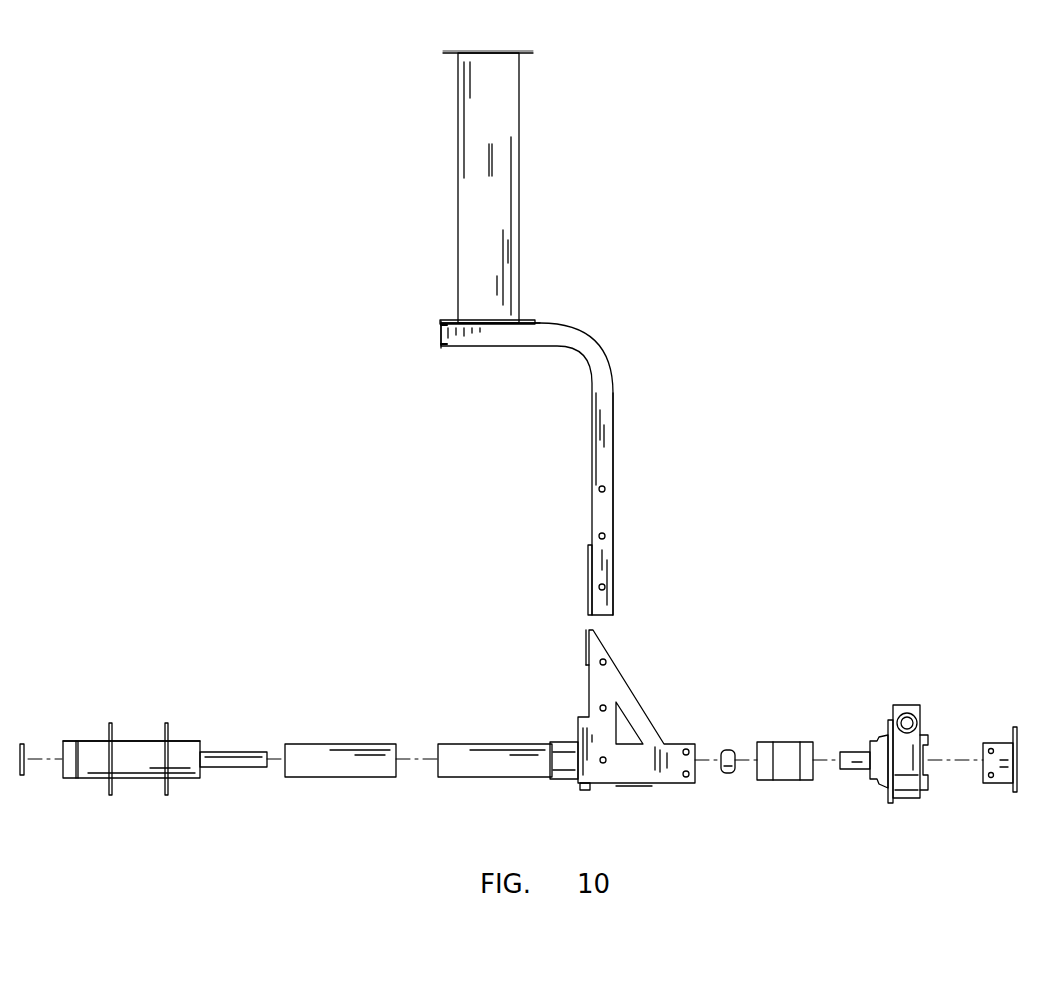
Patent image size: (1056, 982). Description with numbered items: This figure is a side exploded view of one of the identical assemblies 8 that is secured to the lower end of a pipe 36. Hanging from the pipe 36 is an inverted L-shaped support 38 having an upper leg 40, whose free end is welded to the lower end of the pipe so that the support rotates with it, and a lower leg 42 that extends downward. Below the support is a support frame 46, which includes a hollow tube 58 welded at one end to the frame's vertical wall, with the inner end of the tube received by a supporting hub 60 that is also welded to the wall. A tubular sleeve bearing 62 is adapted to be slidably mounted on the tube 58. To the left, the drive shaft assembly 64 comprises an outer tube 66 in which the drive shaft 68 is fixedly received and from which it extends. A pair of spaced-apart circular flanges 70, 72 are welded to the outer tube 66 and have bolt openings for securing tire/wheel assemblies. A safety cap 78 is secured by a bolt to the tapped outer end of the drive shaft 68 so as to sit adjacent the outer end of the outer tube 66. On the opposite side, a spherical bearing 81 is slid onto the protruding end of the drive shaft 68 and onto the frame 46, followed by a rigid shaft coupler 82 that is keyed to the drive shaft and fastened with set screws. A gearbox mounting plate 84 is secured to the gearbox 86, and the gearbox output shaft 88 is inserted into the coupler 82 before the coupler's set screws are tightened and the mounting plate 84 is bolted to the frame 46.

The assembly 8 is at (763, 655).
The pipe 36 is at (512, 197).
The inverted L-shaped support 38 is at (632, 321).
The upper leg 40 is at (495, 338).
The lower leg 42 is at (605, 442).
The support frame 46 is at (660, 676).
The hollow tube 58 is at (472, 750).
The supporting hub 60 is at (565, 748).
The tubular sleeve bearing 62 is at (337, 752).
The drive shaft assembly 64 is at (186, 682).
The outer tube 66 is at (186, 762).
The drive shaft 68 is at (233, 758).
The circular flange 70 is at (108, 728).
The circular flange 72 is at (163, 792).
The safety cap 78 is at (14, 745).
The spherical bearing 81 is at (727, 748).
The rigid shaft coupler 82 is at (790, 762).
The gearbox mounting plate 84 is at (997, 745).
The gearbox 86 is at (902, 715).
The gearbox output shaft 88 is at (855, 752).